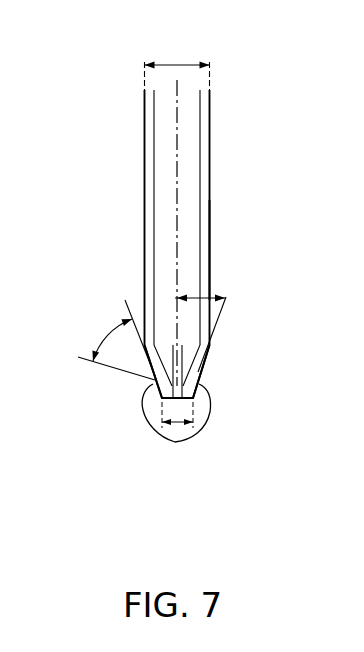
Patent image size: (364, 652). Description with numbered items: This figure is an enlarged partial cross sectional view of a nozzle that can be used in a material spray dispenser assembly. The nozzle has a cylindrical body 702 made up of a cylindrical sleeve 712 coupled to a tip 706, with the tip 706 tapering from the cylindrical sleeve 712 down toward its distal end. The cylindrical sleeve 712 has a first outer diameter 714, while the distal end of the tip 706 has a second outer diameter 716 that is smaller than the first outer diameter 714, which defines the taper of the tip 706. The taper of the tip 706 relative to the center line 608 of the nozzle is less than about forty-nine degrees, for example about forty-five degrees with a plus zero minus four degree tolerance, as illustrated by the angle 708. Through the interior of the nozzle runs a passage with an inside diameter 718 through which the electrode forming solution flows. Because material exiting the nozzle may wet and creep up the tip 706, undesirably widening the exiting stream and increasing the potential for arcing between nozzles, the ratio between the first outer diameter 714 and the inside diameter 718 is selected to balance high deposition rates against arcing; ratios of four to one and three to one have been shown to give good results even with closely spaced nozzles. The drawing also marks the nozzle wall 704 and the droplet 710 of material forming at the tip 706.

The cylindrical body 702 is at (136, 224).
The inner bore diameter 704 is at (224, 128).
The center line 608 is at (177, 127).
The cylindrical sleeve 712 is at (210, 252).
The first outer diameter 714 is at (182, 64).
The inside diameter 718 is at (205, 296).
The taper angle 708 is at (99, 345).
The tip 706 is at (193, 388).
The second outer diameter 716 is at (177, 424).
The droplet 710 is at (147, 420).